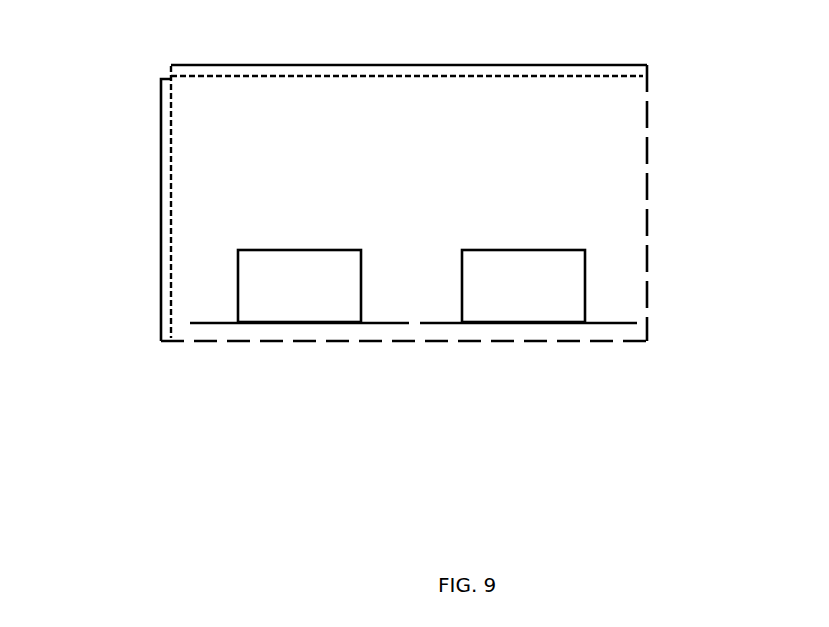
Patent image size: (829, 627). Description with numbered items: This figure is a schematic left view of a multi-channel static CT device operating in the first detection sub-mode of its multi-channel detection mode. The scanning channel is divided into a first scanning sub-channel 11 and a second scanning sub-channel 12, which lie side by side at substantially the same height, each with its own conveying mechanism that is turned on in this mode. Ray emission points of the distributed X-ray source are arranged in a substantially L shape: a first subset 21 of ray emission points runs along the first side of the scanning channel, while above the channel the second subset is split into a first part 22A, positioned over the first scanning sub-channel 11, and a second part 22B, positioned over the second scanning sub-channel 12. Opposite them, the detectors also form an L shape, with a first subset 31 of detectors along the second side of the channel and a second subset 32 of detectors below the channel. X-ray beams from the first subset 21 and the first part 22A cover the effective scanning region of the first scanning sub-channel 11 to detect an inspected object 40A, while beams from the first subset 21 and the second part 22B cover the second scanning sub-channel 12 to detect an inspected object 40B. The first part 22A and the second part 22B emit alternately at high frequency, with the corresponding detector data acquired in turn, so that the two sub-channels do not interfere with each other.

The first scanning sub-channel 11 is at (227, 318).
The second scanning sub-channel 12 is at (440, 323).
The first subset of ray emission points 21 is at (160, 212).
The first part of the second subset of ray emission points 22A is at (260, 65).
The second part of the second subset of ray emission points 22B is at (508, 65).
The first subset of detectors 31 is at (650, 195).
The second subset of detectors 32 is at (607, 340).
The inspected object 40A is at (302, 290).
The inspected object 40B is at (525, 290).